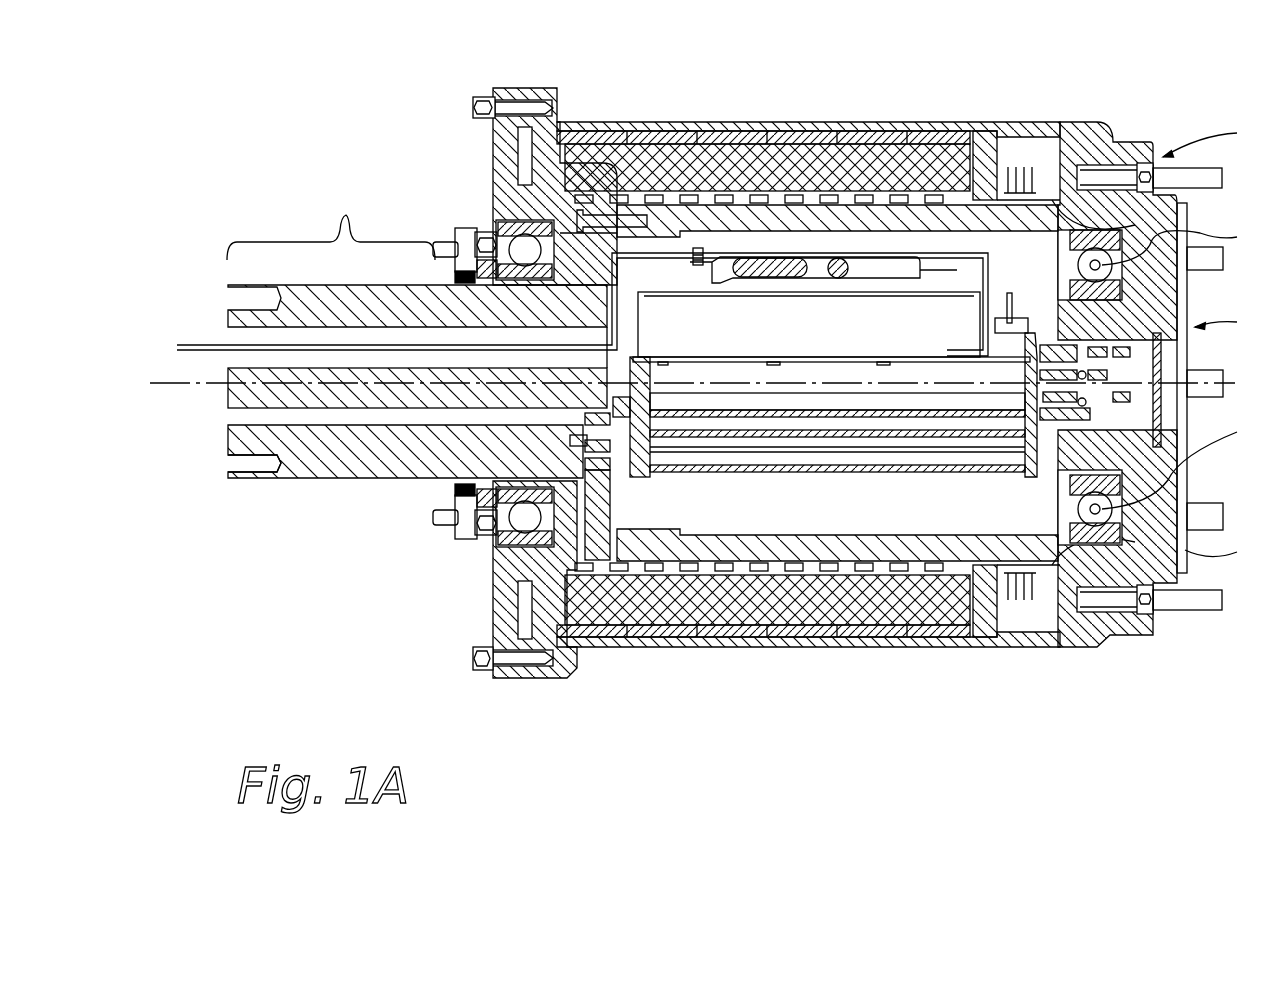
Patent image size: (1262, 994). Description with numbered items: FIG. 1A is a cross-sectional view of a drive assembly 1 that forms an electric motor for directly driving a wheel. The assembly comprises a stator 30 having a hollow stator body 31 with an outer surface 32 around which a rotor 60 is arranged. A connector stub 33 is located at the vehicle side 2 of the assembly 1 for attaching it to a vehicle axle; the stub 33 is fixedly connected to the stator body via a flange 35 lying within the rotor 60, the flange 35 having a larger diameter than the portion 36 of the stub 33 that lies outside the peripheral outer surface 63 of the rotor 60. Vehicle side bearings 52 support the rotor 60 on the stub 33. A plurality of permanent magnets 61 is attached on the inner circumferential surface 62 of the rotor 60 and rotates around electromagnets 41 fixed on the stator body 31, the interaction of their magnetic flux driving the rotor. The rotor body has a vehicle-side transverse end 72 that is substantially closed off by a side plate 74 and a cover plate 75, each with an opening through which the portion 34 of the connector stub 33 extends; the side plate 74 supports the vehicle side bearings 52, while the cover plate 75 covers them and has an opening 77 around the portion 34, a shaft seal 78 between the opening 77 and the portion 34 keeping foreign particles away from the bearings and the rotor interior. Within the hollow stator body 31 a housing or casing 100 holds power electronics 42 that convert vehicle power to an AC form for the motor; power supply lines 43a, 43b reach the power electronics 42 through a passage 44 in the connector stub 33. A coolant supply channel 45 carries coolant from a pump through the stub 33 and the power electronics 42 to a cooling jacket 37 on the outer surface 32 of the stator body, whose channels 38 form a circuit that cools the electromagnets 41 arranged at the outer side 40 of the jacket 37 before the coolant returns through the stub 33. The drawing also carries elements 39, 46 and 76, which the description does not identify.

The drive assembly 1 is at (255, 207).
The vehicle side 2 is at (566, 203).
The stator 30 is at (386, 419).
The hollow stator body 31 is at (1000, 645).
The outer surface 32 is at (858, 580).
The connector stub 33 is at (312, 500).
The portion of the connector stub 34 is at (292, 481).
The flange 35 is at (532, 247).
The portion of the stub 36 is at (362, 224).
The cooling jacket 37 is at (878, 273).
The channels 38 is at (672, 565).
The rotor plate 39 is at (806, 535).
The outer side 40 is at (733, 578).
The electromagnets 41 is at (855, 232).
The power electronics 42 is at (675, 310).
The power supply line 43a is at (218, 343).
The power supply line 43b is at (930, 290).
The passage 44 is at (297, 338).
The coolant supply channel 45 is at (237, 417).
The hub bar 46 is at (612, 562).
The vehicle side bearings 52 is at (523, 247).
The rotor 60 is at (1118, 123).
The permanent magnets 61 is at (647, 190).
The inner circumferential surface 62 is at (707, 180).
The peripheral outer surface 63 is at (790, 230).
The transverse end 72 is at (443, 190).
The side plate 74 is at (510, 142).
The cover plate 75 is at (513, 553).
The fastening screw 76 is at (518, 642).
The opening 77 is at (522, 518).
The shaft seal 78 is at (468, 490).
The housing or casing 100 is at (952, 130).